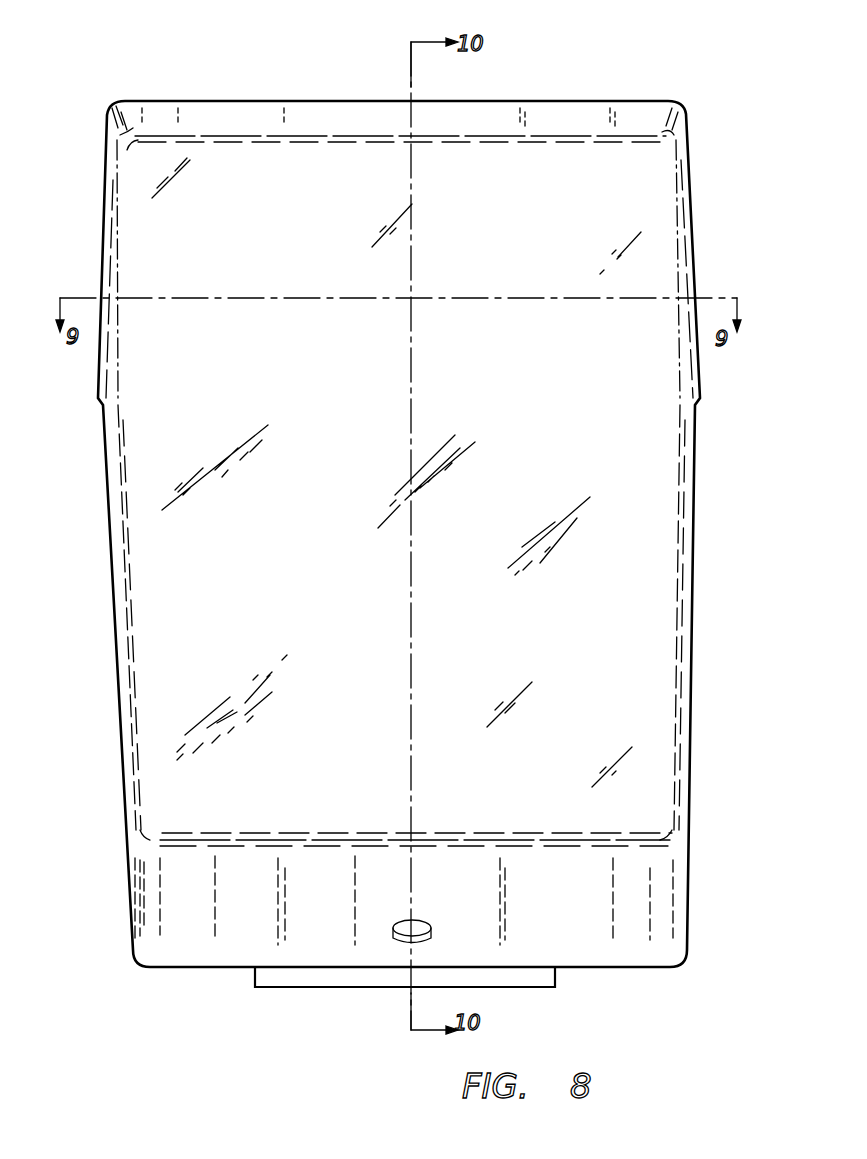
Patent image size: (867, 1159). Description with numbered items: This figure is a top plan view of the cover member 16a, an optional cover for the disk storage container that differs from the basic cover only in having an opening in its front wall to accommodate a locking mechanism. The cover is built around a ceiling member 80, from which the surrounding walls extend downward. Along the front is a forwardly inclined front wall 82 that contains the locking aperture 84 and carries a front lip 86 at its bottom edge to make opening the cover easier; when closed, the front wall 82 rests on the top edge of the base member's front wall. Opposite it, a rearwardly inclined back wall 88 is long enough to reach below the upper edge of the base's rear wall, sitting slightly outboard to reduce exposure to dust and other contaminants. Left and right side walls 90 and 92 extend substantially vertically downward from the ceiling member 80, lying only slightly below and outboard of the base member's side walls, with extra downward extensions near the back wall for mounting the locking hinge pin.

The cover member 16a is at (546, 58).
The ceiling member 80 is at (356, 422).
The front wall 82 is at (334, 898).
The locking aperture 84 is at (428, 926).
The front lip 86 is at (557, 979).
The back wall 88 is at (253, 132).
The left side wall 90 is at (107, 533).
The right side wall 92 is at (694, 539).